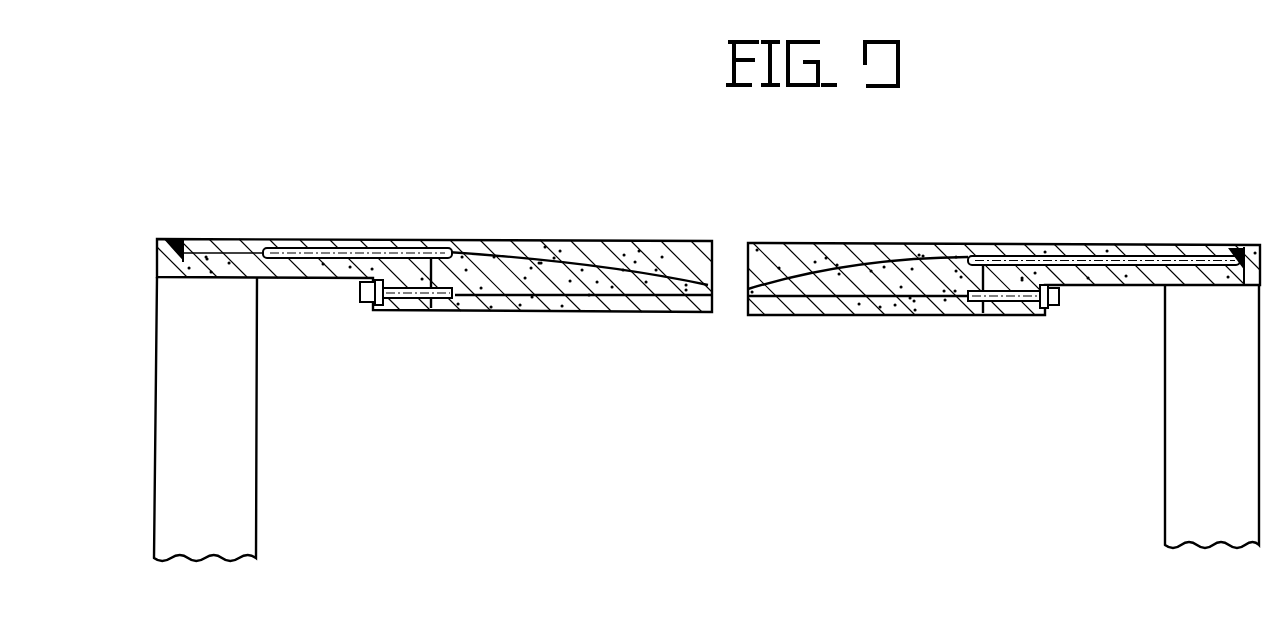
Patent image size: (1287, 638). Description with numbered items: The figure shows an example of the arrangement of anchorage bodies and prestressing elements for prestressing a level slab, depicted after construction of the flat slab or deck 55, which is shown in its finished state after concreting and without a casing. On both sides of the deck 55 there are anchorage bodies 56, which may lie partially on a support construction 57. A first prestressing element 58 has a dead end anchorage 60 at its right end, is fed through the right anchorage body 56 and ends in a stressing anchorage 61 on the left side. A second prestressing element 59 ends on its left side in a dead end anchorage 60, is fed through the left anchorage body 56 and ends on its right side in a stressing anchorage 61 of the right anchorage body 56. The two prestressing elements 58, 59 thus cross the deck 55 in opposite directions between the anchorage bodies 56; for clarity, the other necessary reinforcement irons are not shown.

The deck 55 is at (678, 243).
The anchorage body 56 is at (353, 238).
The support construction 57 is at (233, 489).
The first prestressing element 58 is at (884, 260).
The second prestressing element 59 is at (547, 254).
The dead end anchorage 60 is at (178, 240).
The stressing anchorage 61 is at (407, 303).